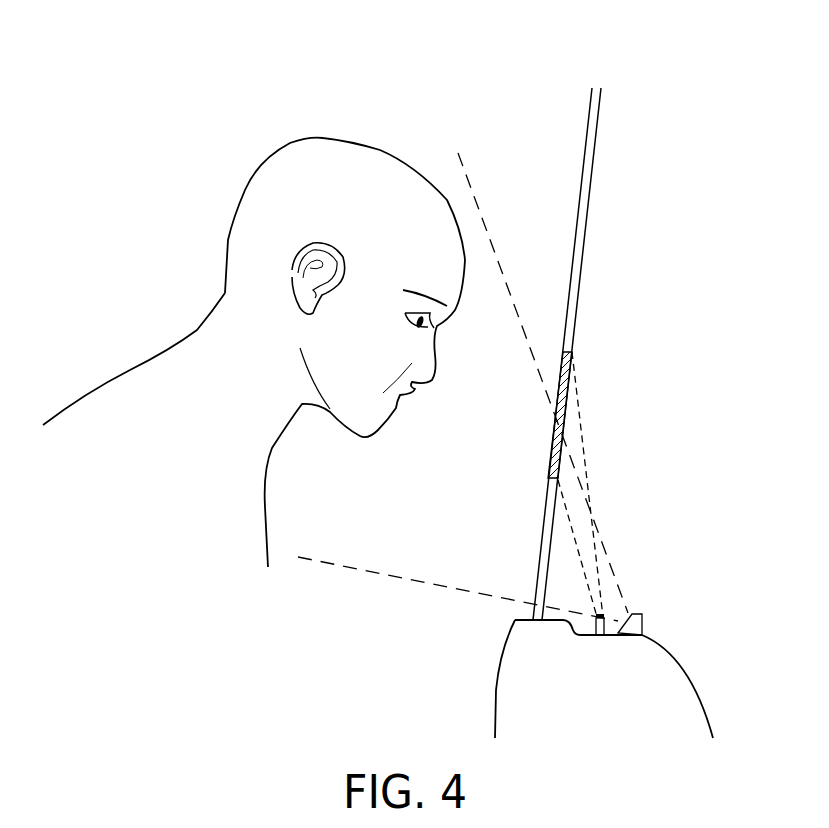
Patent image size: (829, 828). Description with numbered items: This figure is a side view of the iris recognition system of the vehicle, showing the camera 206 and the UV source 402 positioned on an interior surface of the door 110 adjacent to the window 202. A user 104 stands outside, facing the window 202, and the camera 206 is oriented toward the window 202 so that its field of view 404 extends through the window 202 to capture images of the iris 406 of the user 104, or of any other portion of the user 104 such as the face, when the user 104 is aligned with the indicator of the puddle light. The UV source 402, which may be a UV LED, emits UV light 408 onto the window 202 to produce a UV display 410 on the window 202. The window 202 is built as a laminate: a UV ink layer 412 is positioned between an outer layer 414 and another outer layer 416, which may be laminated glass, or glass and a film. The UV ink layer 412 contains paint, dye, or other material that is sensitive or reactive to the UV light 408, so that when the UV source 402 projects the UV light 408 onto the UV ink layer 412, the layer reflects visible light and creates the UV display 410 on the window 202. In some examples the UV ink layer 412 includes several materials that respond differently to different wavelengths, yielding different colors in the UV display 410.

The user 104 is at (343, 141).
The door 110 is at (640, 702).
The window 202 is at (598, 70).
The camera 206 is at (645, 626).
The UV source 402 is at (602, 636).
The field of view 404 is at (497, 258).
The iris 406 is at (433, 328).
The UV light 408 is at (580, 433).
The UV display 410 is at (528, 452).
The UV ink layer 412 is at (548, 433).
The outer layer 414 is at (588, 103).
The outer layer 416 is at (603, 108).